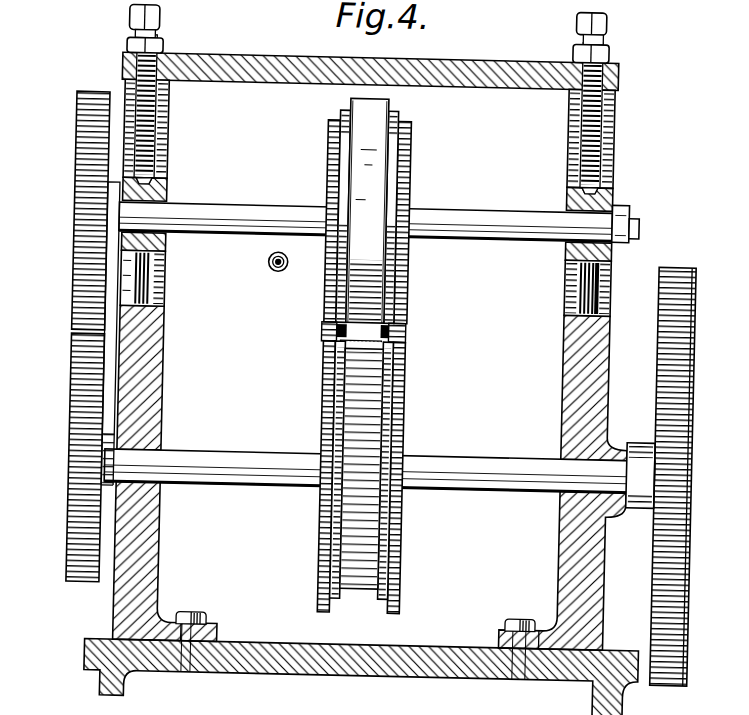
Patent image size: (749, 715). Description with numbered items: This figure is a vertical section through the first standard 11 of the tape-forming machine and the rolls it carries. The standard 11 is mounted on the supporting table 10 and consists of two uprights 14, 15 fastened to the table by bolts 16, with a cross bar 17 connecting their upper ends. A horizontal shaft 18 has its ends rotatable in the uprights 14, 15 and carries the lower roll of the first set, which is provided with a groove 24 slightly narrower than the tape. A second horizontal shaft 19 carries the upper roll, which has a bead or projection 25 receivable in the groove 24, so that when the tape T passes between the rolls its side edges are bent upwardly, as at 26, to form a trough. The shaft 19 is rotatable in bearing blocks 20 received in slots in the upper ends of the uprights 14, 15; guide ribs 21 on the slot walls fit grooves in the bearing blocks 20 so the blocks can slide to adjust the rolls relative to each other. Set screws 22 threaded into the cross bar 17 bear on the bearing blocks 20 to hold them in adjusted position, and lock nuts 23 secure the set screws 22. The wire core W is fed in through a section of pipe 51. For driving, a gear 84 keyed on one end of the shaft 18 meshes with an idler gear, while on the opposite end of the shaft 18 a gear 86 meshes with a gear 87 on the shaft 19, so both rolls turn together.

The supporting table 10 is at (108, 689).
The standard 11 is at (373, 333).
The upright 14 is at (135, 367).
The upright 15 is at (578, 376).
The bolts 16 is at (207, 618).
The cross bar 17 is at (241, 62).
The horizontal shaft 18 is at (250, 464).
The second horizontal shaft 19 is at (228, 218).
The bearing blocks 20 is at (160, 187).
The guide ribs 21 is at (143, 283).
The set screws 22 is at (147, 142).
The lock nuts 23 is at (158, 51).
The groove 24 is at (371, 388).
The bead 25 is at (364, 160).
The upwardly bent side edges 26 is at (325, 346).
The section of pipe 51 is at (274, 274).
The gear 84 is at (676, 407).
The gear 86 is at (85, 464).
The gear 87 is at (83, 237).